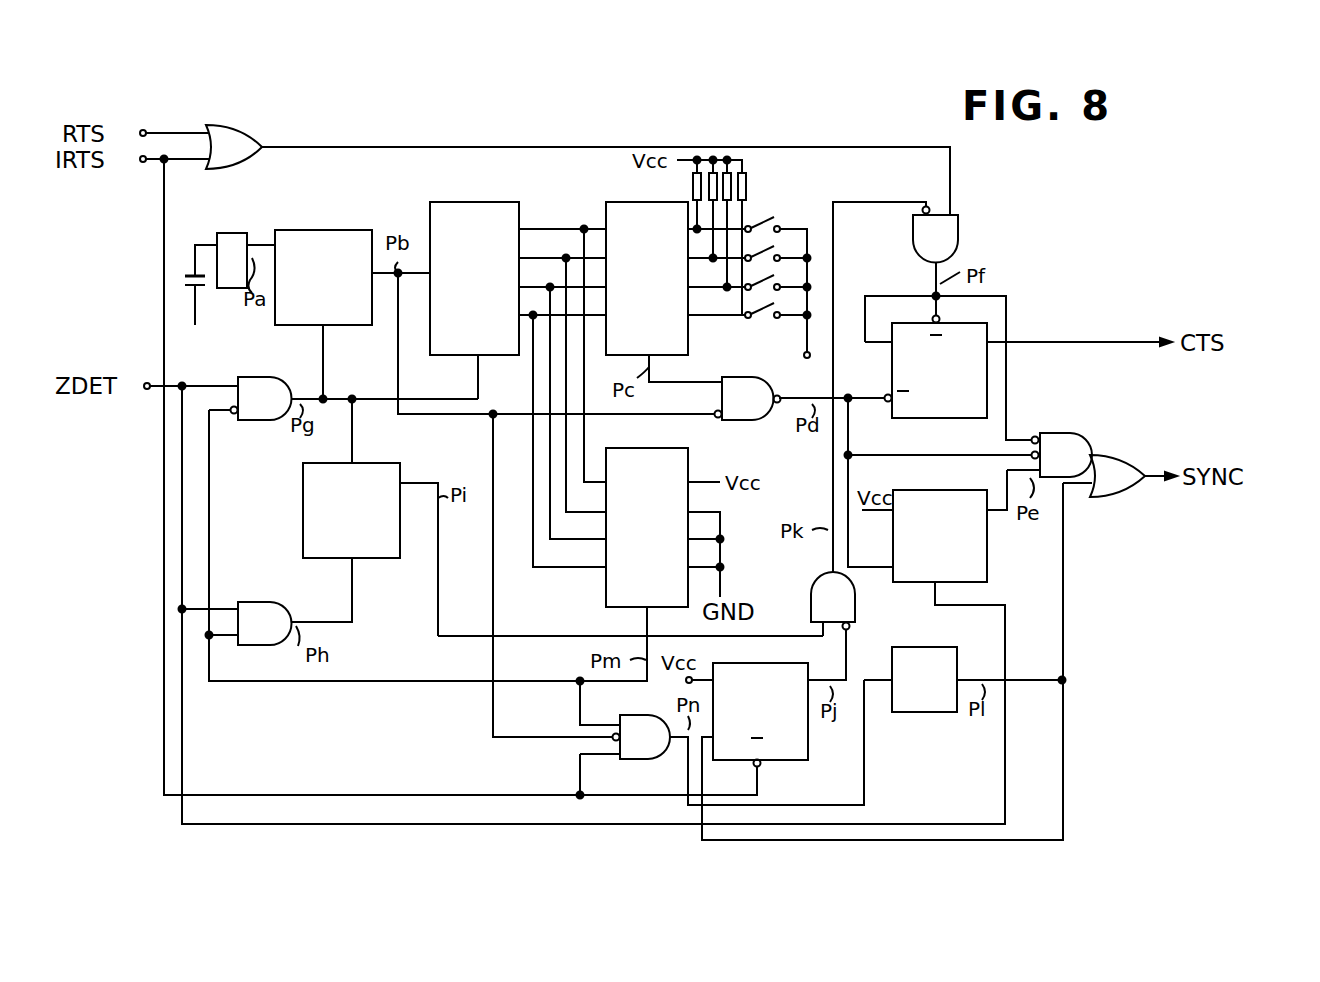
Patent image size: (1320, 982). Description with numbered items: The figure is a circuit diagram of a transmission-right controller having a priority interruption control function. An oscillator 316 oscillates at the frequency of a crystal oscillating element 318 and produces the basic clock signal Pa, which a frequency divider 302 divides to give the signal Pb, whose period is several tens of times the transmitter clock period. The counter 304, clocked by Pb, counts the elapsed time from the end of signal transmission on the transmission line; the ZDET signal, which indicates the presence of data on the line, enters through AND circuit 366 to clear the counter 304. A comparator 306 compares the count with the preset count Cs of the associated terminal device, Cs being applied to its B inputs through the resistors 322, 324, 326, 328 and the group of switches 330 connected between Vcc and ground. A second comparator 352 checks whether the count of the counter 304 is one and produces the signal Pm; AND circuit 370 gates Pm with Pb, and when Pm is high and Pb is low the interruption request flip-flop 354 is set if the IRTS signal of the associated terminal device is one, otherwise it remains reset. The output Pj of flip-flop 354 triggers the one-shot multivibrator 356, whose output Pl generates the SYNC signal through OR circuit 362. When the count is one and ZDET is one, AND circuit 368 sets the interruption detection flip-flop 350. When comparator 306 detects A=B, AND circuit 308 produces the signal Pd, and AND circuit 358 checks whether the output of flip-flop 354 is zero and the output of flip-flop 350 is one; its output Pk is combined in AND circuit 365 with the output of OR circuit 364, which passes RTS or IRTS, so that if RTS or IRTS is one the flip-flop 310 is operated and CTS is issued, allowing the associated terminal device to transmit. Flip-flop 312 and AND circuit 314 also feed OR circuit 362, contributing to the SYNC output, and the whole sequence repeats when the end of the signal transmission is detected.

The frequency divider 302 is at (318, 230).
The counter 304 is at (488, 202).
The comparator 306 is at (638, 202).
The AND circuit 308 is at (748, 421).
The flip-flop 310 is at (962, 418).
The flip-flop 312 is at (988, 572).
The AND circuit 314 is at (1060, 433).
The oscillator 316 is at (232, 234).
The oscillating element 318 is at (205, 304).
The resistor 322 is at (693, 176).
The resistor 324 is at (710, 175).
The resistor 326 is at (729, 175).
The resistor 328 is at (745, 190).
The switches 330 is at (782, 323).
The interruption detection flip-flop 350 is at (376, 560).
The comparator 352 is at (606, 600).
The interruption request flip-flop 354 is at (798, 762).
The one-shot multivibrator 356 is at (922, 714).
The AND circuit 358 is at (856, 622).
The OR circuit 362 is at (1104, 500).
The OR circuit 364 is at (250, 128).
The AND gate 365 is at (958, 236).
The AND circuit 366 is at (250, 421).
The AND circuit 368 is at (264, 602).
The AND circuit 370 is at (648, 760).